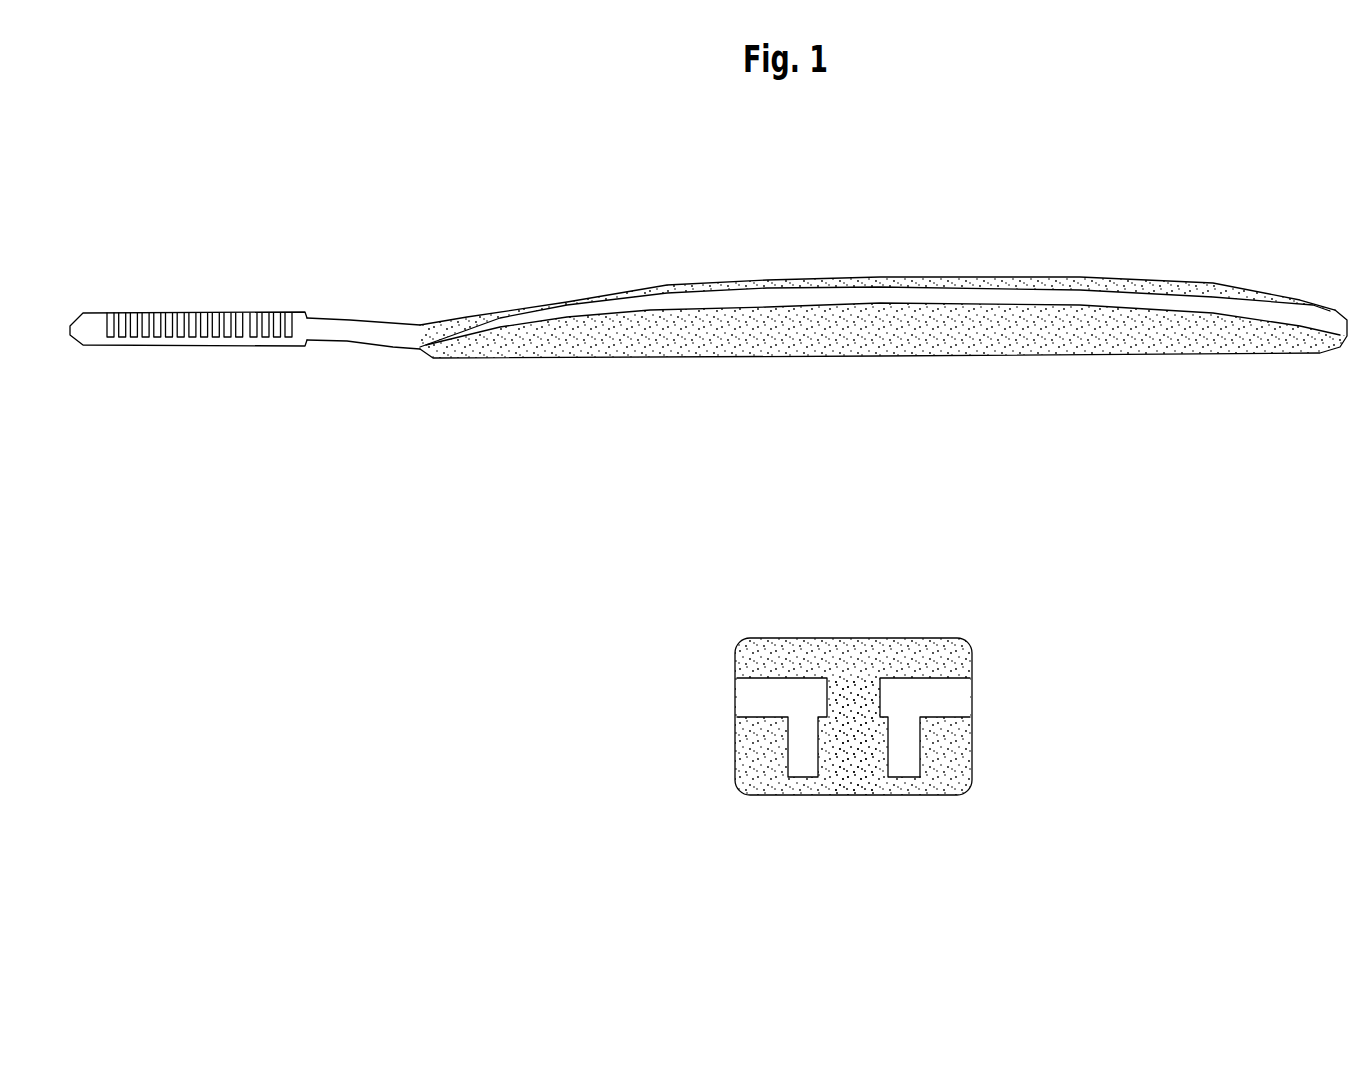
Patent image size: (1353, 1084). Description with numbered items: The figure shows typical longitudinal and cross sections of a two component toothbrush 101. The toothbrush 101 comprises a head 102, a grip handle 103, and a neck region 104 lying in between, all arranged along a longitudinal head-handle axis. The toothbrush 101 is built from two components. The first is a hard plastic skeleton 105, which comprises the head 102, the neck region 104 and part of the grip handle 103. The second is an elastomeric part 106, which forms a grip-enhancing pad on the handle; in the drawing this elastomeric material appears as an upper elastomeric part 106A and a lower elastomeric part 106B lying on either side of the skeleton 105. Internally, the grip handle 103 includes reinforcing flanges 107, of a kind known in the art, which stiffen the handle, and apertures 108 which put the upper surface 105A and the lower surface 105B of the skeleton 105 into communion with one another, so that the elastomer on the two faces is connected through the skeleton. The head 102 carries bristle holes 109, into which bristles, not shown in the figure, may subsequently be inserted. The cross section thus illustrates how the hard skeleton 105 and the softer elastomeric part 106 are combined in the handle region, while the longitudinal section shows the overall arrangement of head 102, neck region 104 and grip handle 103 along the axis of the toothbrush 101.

The two component toothbrush 101 is at (1170, 223).
The head 102 is at (193, 347).
The grip handle 103 is at (820, 247).
The neck region 104 is at (358, 345).
The hard plastic skeleton 105 is at (800, 298).
The upper surface of the skeleton 105A is at (923, 283).
The lower surface of the skeleton 105B is at (862, 305).
The elastomeric part 106 is at (1058, 322).
The elastomeric part 106A is at (692, 282).
The elastomeric part 106B is at (950, 356).
The reinforcing flanges 107 is at (797, 752).
The apertures 108 is at (850, 692).
The bristle holes 109 is at (232, 308).